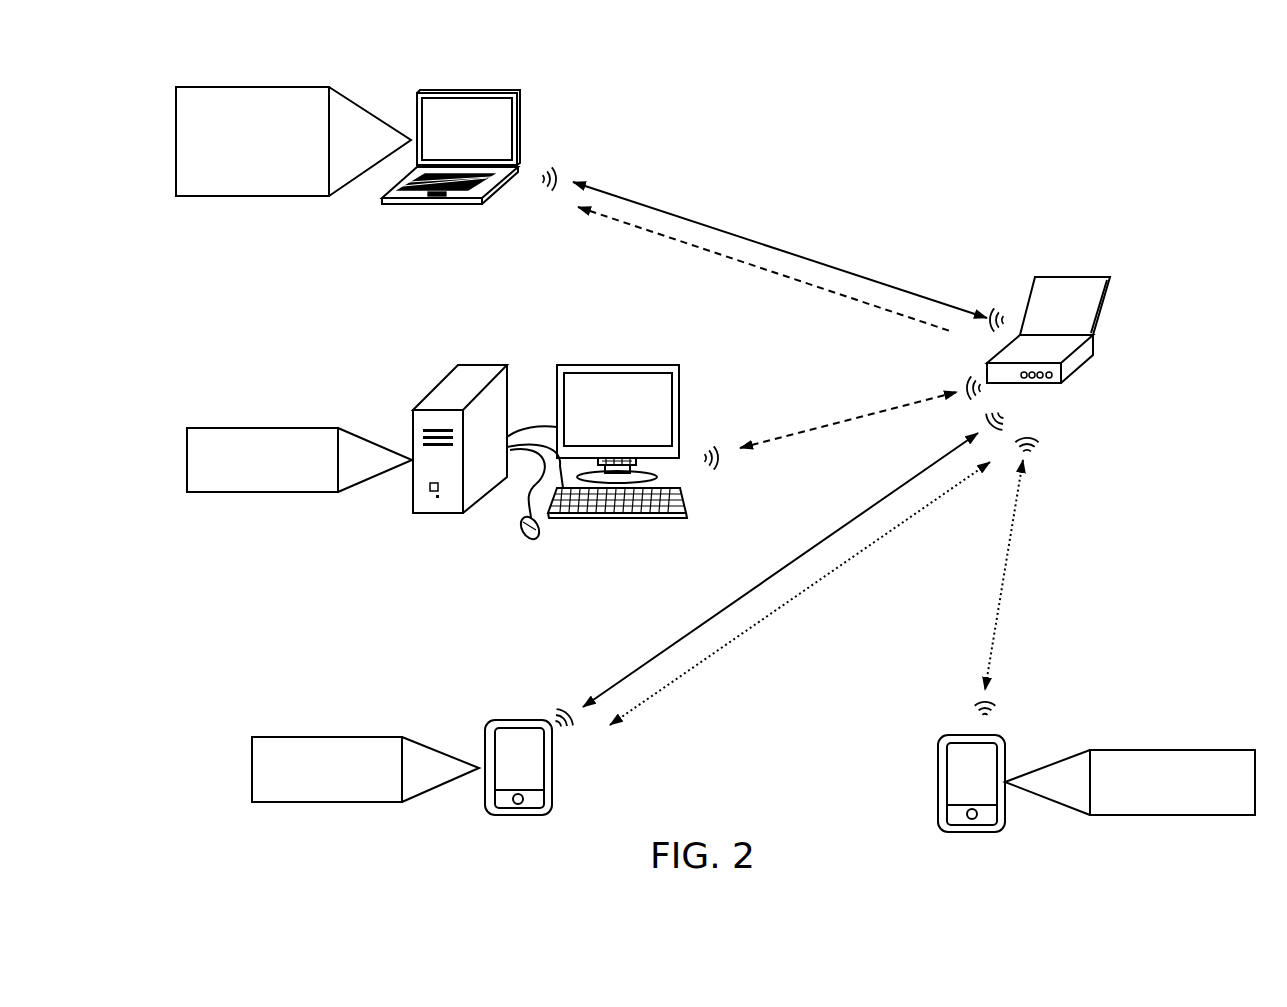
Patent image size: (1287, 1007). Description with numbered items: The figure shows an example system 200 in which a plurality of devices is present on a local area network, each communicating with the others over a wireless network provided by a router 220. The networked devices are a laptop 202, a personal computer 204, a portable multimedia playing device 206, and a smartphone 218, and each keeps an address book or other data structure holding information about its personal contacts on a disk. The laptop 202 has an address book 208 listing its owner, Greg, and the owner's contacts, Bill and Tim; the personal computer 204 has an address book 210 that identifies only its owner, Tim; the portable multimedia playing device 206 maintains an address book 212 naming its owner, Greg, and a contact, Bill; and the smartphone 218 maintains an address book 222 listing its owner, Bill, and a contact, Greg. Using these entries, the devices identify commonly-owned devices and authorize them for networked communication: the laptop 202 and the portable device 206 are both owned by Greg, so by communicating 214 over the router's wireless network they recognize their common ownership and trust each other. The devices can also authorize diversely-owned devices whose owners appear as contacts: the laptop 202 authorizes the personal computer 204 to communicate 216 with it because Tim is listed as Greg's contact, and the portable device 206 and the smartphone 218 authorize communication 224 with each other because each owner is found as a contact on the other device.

The system 200 is at (860, 83).
The laptop 202 is at (502, 92).
The personal computer 204 is at (488, 365).
The portable multimedia playing device 206 is at (508, 720).
The address book 208 is at (313, 87).
The address book 210 is at (332, 428).
The address book 212 is at (390, 737).
The communicating 214 is at (735, 235).
The communication 216 is at (873, 305).
The smartphone 218 is at (990, 733).
The router 220 is at (1080, 367).
The address book 222 is at (1182, 750).
The communication 224 is at (1005, 577).